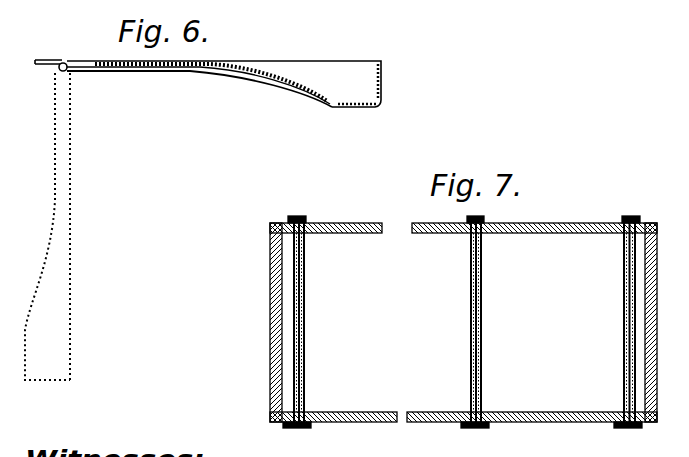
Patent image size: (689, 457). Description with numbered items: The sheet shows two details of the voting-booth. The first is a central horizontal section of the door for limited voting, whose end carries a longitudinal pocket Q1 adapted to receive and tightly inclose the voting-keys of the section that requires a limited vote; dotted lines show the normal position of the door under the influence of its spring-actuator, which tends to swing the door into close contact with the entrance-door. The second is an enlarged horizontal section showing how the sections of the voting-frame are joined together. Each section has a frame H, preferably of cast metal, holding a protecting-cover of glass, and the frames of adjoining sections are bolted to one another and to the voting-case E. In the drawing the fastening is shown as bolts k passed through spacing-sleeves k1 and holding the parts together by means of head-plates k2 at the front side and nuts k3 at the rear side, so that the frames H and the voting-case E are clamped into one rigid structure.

In FIG. 6, the longitudinal pocket Q1 is at (202, 220).
In FIG. 7, the frame H is at (368, 422).
In FIG. 7, the voting-case E is at (545, 228).
In FIG. 7, the bolt rod k is at (480, 340).
In FIG. 7, the bolt core k1 is at (480, 375).
In FIG. 7, the lower nut k2 is at (473, 422).
In FIG. 7, the upper nut k3 is at (480, 221).